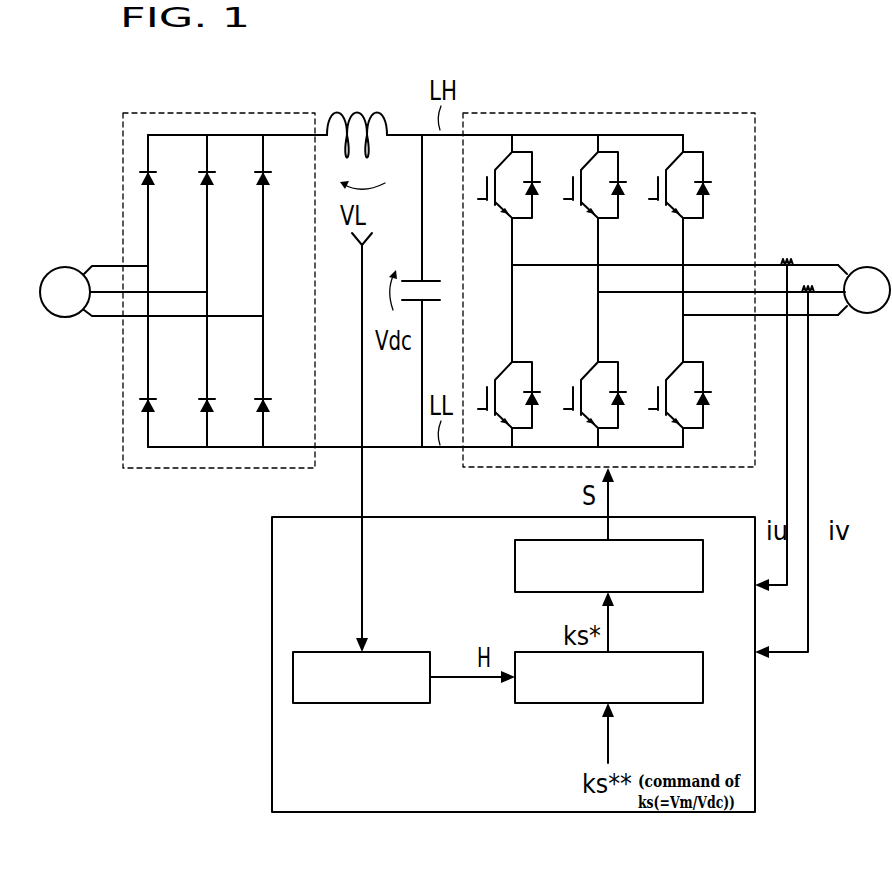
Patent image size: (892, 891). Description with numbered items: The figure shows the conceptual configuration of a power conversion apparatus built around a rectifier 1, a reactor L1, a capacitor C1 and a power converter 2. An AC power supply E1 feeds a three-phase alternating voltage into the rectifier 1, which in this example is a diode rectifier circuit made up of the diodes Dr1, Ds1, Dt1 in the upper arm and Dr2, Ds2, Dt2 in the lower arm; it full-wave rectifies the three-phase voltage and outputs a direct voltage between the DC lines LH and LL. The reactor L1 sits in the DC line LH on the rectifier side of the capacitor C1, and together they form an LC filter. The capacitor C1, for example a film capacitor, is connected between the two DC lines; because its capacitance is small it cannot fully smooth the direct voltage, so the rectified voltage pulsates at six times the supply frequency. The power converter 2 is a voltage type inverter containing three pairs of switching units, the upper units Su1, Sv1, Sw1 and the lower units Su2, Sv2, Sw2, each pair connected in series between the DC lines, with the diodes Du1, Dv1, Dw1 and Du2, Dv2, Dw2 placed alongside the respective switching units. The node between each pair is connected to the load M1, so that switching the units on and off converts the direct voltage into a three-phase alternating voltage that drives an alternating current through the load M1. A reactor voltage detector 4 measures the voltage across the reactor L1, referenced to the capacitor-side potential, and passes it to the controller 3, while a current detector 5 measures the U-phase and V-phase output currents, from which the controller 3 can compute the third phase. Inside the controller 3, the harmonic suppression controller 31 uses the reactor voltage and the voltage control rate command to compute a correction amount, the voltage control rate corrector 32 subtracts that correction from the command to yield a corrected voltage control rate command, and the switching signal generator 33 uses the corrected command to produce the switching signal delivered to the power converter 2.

The rectifier 1 is at (237, 113).
The power converter 2 is at (697, 113).
The controller 3 is at (722, 526).
The reactor voltage detector 4 is at (356, 250).
The current detector 5 is at (809, 284).
The harmonic suppression controller 31 is at (403, 650).
The voltage control rate corrector 32 is at (682, 650).
The switching signal generator 33 is at (682, 540).
The AC power supply E1 is at (64, 268).
The load M1 is at (866, 268).
The reactor L1 is at (357, 112).
The capacitor C1 is at (436, 280).
The diode Dr1 is at (160, 180).
The diode Ds1 is at (219, 180).
The diode Dt1 is at (275, 180).
The diode Dr2 is at (162, 405).
The diode Ds2 is at (221, 405).
The diode Dt2 is at (277, 405).
The switching unit Su1 is at (488, 205).
The switching unit Sv1 is at (574, 205).
The switching unit Sw1 is at (659, 205).
The switching unit Su2 is at (487, 382).
The switching unit Sv2 is at (573, 382).
The switching unit Sw2 is at (658, 382).
The diode Du1 is at (545, 188).
The diode Dv1 is at (631, 188).
The diode Dw1 is at (716, 188).
The diode Du2 is at (545, 396).
The diode Dv2 is at (631, 396).
The diode Dw2 is at (716, 396).